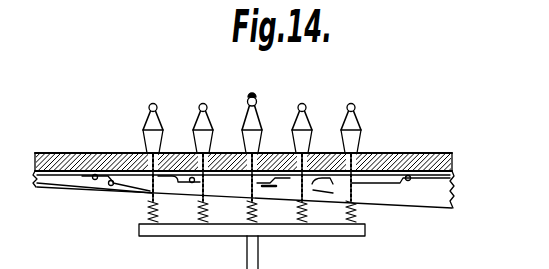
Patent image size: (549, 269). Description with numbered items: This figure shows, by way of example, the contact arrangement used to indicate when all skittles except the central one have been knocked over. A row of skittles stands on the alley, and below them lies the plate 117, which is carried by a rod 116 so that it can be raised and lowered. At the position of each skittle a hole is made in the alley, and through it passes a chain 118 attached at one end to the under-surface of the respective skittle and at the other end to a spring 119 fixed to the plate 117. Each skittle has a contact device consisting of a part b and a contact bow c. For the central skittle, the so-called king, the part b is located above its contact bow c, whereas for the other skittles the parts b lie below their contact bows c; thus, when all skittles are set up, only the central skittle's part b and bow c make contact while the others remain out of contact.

The contact device part b is at (118, 183).
The contact bow c is at (322, 183).
The rod 116 is at (254, 257).
The plate 117 is at (152, 228).
The chain 118 is at (148, 196).
The spring 119 is at (355, 210).